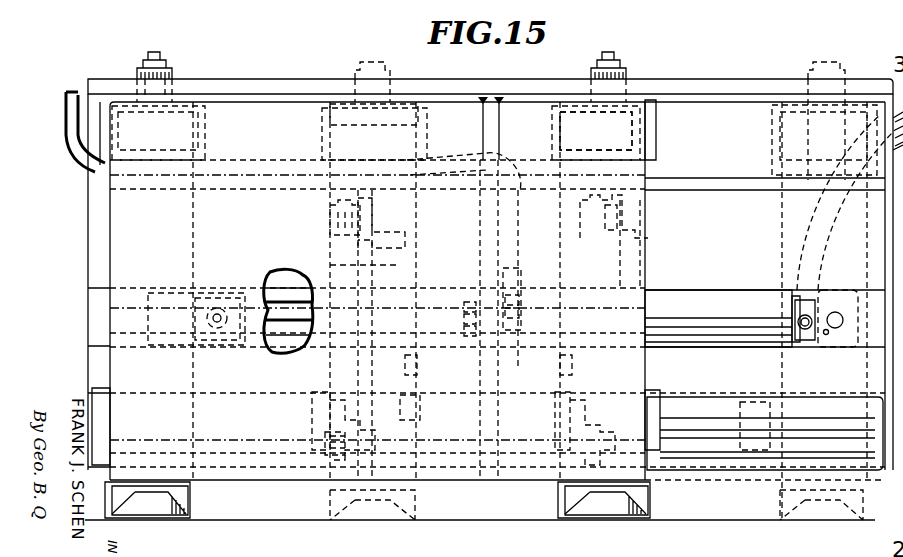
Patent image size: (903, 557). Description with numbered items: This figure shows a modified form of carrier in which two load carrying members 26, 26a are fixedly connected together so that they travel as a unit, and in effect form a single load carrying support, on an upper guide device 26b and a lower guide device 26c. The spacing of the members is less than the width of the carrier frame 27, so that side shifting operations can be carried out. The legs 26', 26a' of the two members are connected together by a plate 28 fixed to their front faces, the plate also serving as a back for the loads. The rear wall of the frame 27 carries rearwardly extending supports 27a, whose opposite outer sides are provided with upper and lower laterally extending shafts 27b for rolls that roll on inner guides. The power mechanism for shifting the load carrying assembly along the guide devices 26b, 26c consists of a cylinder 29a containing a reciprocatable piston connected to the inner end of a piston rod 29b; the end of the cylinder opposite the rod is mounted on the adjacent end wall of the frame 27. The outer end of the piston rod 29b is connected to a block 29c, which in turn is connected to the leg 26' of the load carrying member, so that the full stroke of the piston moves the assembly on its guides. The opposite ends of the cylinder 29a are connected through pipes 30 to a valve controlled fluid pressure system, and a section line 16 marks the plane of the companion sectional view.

The section line 16- 16 is at (432, 538).
The load carrying member 26 is at (484, 519).
The load carrying member 26a is at (591, 519).
The leg 26a' is at (637, 143).
The upper guide device 26b is at (232, 70).
The lower guide device 26c is at (748, 393).
The leg 26' is at (196, 273).
The carrier frame 27 is at (469, 299).
The rearwardly extending support 27a is at (358, 266).
The laterally extending shaft 27b is at (333, 206).
The plate 28 is at (628, 277).
The cylinder 29a is at (738, 315).
The piston rod 29b is at (290, 350).
The block 29c is at (209, 290).
The pipe 30 is at (72, 128).